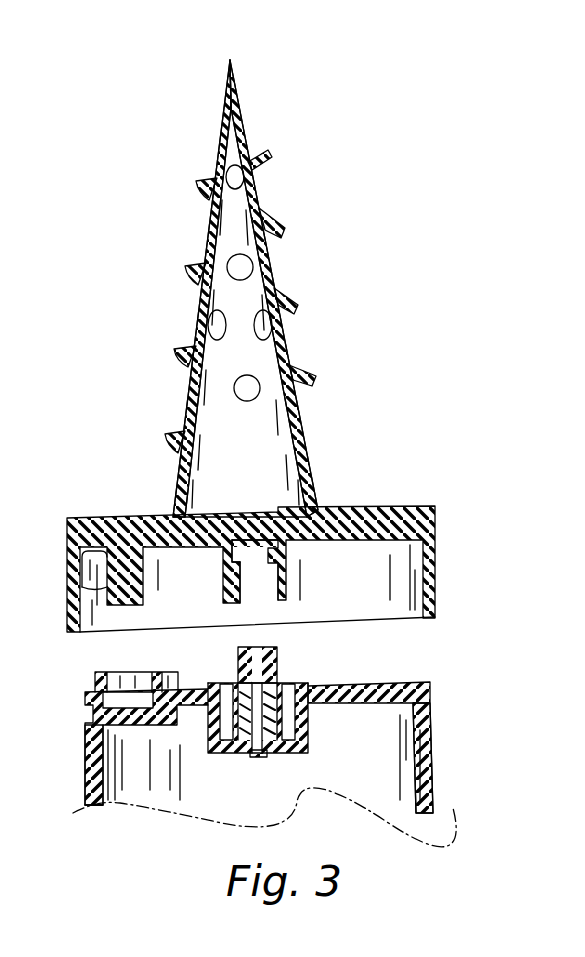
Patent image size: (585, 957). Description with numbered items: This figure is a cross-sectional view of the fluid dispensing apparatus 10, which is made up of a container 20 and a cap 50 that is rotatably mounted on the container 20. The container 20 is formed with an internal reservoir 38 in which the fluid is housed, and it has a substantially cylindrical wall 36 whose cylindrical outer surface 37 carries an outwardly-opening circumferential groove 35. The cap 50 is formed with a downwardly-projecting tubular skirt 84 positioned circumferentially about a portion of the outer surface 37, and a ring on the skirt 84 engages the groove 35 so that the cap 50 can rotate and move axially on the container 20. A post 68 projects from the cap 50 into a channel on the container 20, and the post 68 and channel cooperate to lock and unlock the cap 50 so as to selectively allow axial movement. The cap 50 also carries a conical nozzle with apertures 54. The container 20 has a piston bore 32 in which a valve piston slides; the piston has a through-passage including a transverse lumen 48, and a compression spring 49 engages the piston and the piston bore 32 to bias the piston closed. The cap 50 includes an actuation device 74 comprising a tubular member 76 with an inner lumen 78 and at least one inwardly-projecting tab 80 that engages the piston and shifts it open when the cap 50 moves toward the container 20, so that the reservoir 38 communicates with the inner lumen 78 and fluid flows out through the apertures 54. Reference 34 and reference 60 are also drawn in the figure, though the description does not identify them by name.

The fluid dispensing apparatus 10 is at (409, 366).
The container 20 is at (431, 835).
The piston bore 32 is at (172, 804).
The base housing 34 is at (444, 756).
The circumferential groove 35 is at (433, 757).
The cylindrical wall 36 is at (100, 784).
The cylindrical outer surface 37 is at (88, 800).
The reservoir 38 is at (113, 794).
The transverse lumen 48 is at (265, 758).
The compression spring 49 is at (273, 722).
The cap 50 is at (309, 172).
The apertures 54 is at (284, 291).
The barbs 60 is at (240, 301).
The post 68 is at (78, 585).
The actuation device 74 is at (297, 580).
The tubular member 76 is at (320, 509).
The inner lumen 78 is at (252, 535).
The inwardly-projecting tab 80 is at (240, 562).
The tubular skirt 84 is at (437, 597).